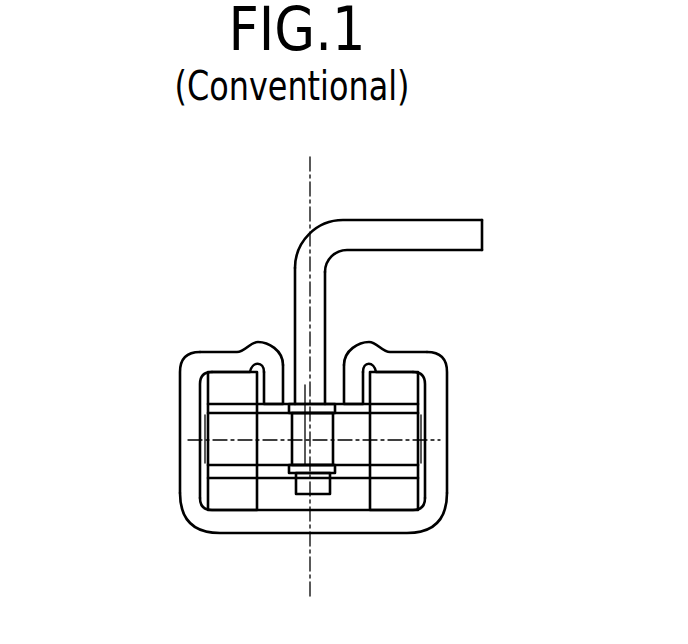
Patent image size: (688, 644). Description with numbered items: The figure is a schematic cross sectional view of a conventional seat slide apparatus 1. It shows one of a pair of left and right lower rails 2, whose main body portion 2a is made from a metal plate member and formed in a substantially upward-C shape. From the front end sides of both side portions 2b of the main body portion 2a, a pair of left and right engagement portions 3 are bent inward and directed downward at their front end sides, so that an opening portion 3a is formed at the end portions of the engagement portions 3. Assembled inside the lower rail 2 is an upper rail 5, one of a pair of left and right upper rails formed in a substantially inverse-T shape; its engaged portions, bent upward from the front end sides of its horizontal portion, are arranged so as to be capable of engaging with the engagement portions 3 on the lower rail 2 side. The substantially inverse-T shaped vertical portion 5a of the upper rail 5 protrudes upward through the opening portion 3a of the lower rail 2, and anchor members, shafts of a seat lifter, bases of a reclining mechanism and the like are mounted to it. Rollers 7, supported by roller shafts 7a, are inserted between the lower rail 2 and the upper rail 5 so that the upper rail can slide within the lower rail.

The seat slide apparatus 1 is at (283, 379).
The lower rail 2 is at (301, 431).
The main body portion 2a is at (262, 533).
The side portion 2b is at (179, 401).
The engagement portion 3 is at (236, 352).
The opening portion 3a is at (289, 363).
The upper rail 5 is at (388, 272).
The vertical portion 5a is at (326, 291).
The roller 7 is at (317, 490).
The roller shaft 7a is at (354, 460).